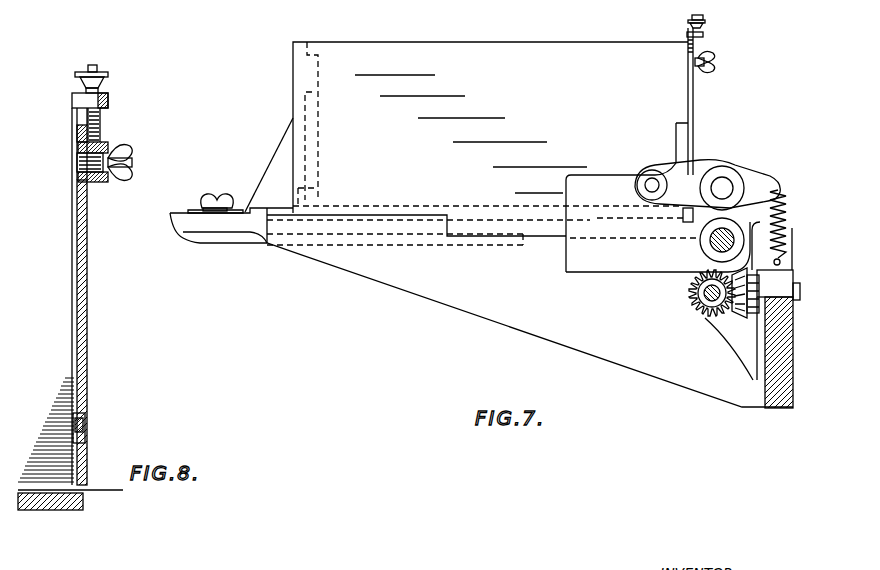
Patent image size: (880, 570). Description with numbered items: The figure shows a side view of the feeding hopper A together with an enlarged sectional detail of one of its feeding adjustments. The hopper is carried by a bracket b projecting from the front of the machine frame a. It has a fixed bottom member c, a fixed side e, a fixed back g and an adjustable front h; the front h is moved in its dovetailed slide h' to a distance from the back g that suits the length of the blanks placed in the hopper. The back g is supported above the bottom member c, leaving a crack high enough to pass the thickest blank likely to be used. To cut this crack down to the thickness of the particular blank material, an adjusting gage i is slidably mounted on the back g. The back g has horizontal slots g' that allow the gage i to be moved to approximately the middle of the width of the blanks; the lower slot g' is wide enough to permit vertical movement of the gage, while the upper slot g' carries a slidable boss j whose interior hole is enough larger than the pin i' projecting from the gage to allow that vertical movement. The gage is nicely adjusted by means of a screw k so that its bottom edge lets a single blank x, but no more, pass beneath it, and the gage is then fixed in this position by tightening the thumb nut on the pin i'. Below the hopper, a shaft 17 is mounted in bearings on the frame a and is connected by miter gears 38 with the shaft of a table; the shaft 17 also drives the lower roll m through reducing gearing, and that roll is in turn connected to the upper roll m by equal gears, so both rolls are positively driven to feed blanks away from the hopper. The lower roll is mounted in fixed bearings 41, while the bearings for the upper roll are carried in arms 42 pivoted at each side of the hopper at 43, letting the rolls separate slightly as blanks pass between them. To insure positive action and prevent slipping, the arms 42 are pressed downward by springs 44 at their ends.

In FIG. 7, the hopper A is at (471, 100).
In FIG. 7, the machine frame a is at (783, 400).
In FIG. 7, the bracket b is at (372, 272).
In FIG. 8, the fixed bottom member c is at (63, 512).
In FIG. 7, the fixed side e is at (293, 70).
In FIG. 8, the fixed back g is at (97, 289).
In FIG. 7, the fixed back g is at (717, 101).
In FIG. 8, the horizontal slots g' is at (74, 331).
In FIG. 7, the adjustable front h is at (300, 108).
In FIG. 7, the dovetailed slide h' is at (240, 165).
In FIG. 8, the adjusting gage i is at (68, 296).
In FIG. 7, the adjusting gage i is at (679, 36).
In FIG. 8, the pin i' is at (133, 162).
In FIG. 7, the pin i' is at (705, 61).
In FIG. 8, the slidable boss j is at (93, 185).
In FIG. 8, the screw k is at (97, 68).
In FIG. 7, the screw k is at (703, 17).
In FIG. 7, the roll m is at (732, 167).
In FIG. 8, the blank x is at (118, 493).
In FIG. 7, the shaft 17 is at (698, 297).
In FIG. 7, the miter gears 38 is at (705, 318).
In FIG. 7, the fixed bearings 41 is at (700, 242).
In FIG. 7, the arms 42 is at (700, 172).
In FIG. 7, the pivot 43 is at (652, 180).
In FIG. 7, the springs 44 is at (789, 207).